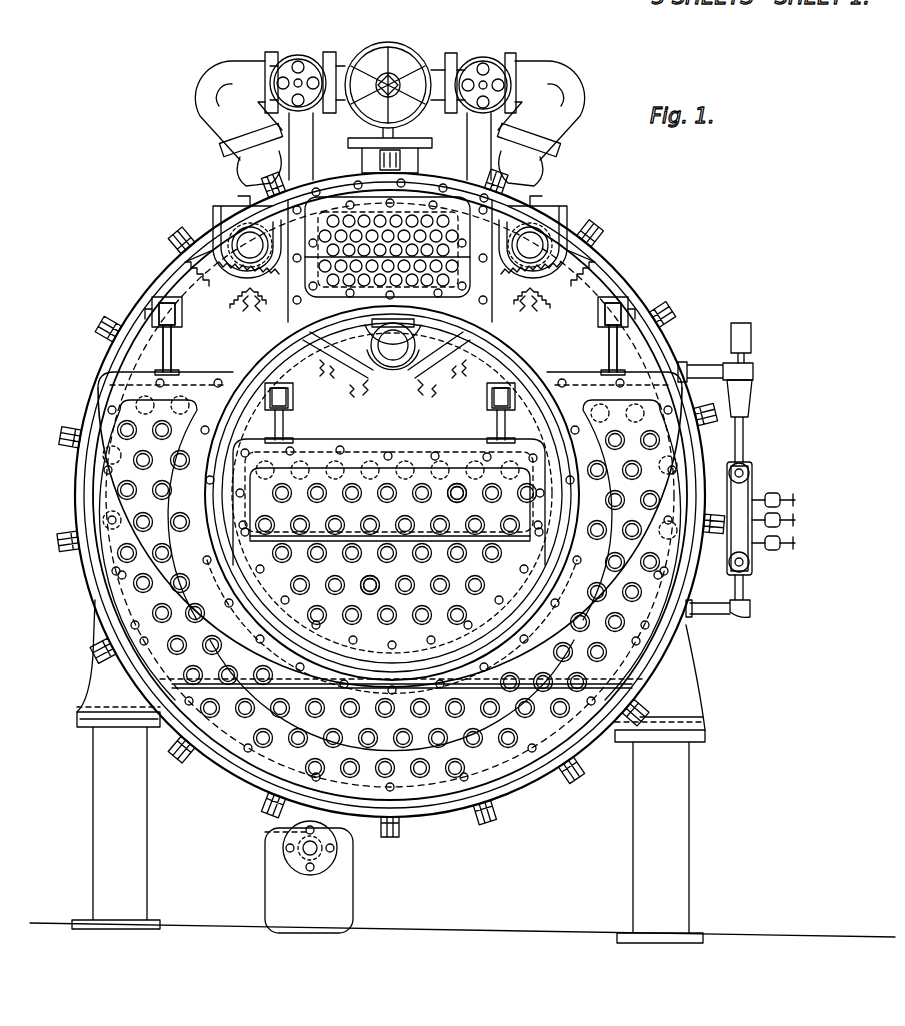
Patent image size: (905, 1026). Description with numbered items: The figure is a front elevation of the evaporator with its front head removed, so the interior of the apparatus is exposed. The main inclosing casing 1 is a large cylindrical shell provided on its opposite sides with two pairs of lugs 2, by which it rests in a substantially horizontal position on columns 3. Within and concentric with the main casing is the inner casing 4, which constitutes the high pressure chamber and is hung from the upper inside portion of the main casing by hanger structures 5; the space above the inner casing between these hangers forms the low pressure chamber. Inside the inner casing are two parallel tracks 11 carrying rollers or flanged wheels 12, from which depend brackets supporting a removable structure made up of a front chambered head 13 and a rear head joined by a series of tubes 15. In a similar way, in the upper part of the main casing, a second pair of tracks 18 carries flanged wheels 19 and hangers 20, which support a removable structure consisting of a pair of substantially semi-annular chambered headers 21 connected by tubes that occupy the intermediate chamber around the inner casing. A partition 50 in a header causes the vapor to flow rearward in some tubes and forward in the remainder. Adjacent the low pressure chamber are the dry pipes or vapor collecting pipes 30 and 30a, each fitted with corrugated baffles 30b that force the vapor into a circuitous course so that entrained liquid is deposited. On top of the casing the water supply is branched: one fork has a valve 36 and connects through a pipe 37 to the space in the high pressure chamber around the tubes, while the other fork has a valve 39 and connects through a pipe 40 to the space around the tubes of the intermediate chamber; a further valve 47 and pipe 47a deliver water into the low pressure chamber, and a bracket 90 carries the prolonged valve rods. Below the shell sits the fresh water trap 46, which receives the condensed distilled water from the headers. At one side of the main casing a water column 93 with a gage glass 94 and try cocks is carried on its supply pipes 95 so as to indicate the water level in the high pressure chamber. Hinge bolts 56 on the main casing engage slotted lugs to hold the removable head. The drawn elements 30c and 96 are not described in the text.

The main inclosing casing 1 is at (520, 800).
The lugs 2 is at (105, 682).
The columns 3 is at (462, 827).
The inner casing 4 is at (512, 352).
The hanger structures 5 is at (505, 318).
The tracks 11 is at (285, 420).
The flanged wheels 12 is at (292, 392).
The front chambered head 13 is at (420, 460).
The tubes 15 is at (462, 538).
The second pair of tracks 18 is at (172, 330).
The flanged wheels 19 is at (162, 305).
The hangers 20 is at (171, 352).
The semi-annular chambered header 21 is at (110, 445).
The vapor collecting pipe 30 is at (393, 355).
The vapor collecting pipe 30a is at (252, 248).
The baffles 30b is at (240, 300).
The toothed connection 30c is at (355, 400).
The valve 36 is at (298, 60).
The pipe 37 is at (205, 95).
The valve 39 is at (486, 68).
The pipe 40 is at (565, 88).
The fresh water trap 46 is at (280, 893).
The valve 47 is at (400, 60).
The pipe 47a is at (418, 160).
The partition 50 is at (175, 748).
The hinge bolts 56 is at (62, 432).
The bracket 90 is at (330, 135).
The water column 93 is at (755, 570).
The gage glass 94 is at (730, 550).
The supply pipes 95 is at (705, 370).
The lower gauge connection 96 is at (720, 615).